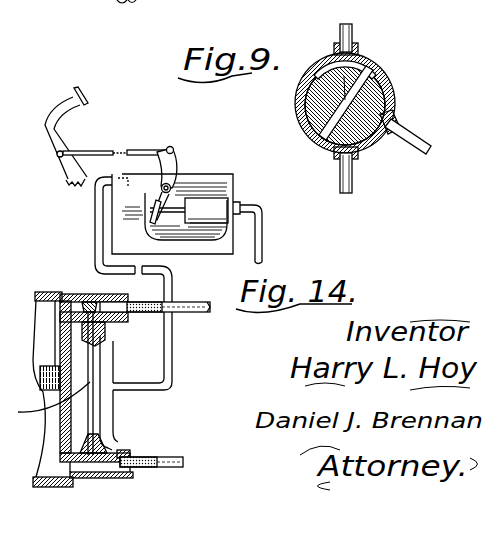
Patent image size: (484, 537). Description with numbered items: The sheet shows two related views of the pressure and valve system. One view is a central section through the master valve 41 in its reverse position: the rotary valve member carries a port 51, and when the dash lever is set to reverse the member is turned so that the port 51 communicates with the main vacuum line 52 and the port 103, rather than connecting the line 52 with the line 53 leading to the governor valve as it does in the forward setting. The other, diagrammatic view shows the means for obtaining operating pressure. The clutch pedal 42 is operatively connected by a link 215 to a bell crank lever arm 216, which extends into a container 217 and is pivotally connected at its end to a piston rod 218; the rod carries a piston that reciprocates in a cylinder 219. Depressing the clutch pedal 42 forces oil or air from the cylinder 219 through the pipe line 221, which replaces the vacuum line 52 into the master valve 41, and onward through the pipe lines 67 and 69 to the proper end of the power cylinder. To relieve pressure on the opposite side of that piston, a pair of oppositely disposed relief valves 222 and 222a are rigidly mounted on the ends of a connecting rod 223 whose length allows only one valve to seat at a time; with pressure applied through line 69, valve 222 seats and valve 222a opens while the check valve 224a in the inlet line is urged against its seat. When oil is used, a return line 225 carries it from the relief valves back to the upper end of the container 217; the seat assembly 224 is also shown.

In FIG. 9, the master valve 41 is at (392, 84).
In FIG. 9, the port 51 is at (358, 92).
In FIG. 9, the main vacuum line 52 is at (360, 24).
In FIG. 9, the line leading to the governor valve 53 is at (422, 139).
In FIG. 9, the port 103 is at (352, 183).
In FIG. 14, the clutch pedal 42 is at (53, 109).
In FIG. 14, the link 215 is at (133, 148).
In FIG. 14, the bell crank lever arm 216 is at (174, 167).
In FIG. 14, the container 217 is at (157, 179).
In FIG. 14, the piston rod 218 is at (158, 206).
In FIG. 14, the cylinder 219 is at (208, 210).
In FIG. 14, the pipe line 221 is at (262, 244).
In FIG. 14, the relief valve 222 is at (88, 310).
In FIG. 14, the relief valve 222a is at (110, 443).
In FIG. 14, the connecting rod 223 is at (45, 402).
In FIG. 14, the upper valve member 224 is at (113, 303).
In FIG. 14, the check valve 224a is at (117, 478).
In FIG. 14, the return line 225 is at (172, 368).
In FIG. 14, the pipe line 69 is at (210, 310).
In FIG. 14, the pipe line 67 is at (152, 457).